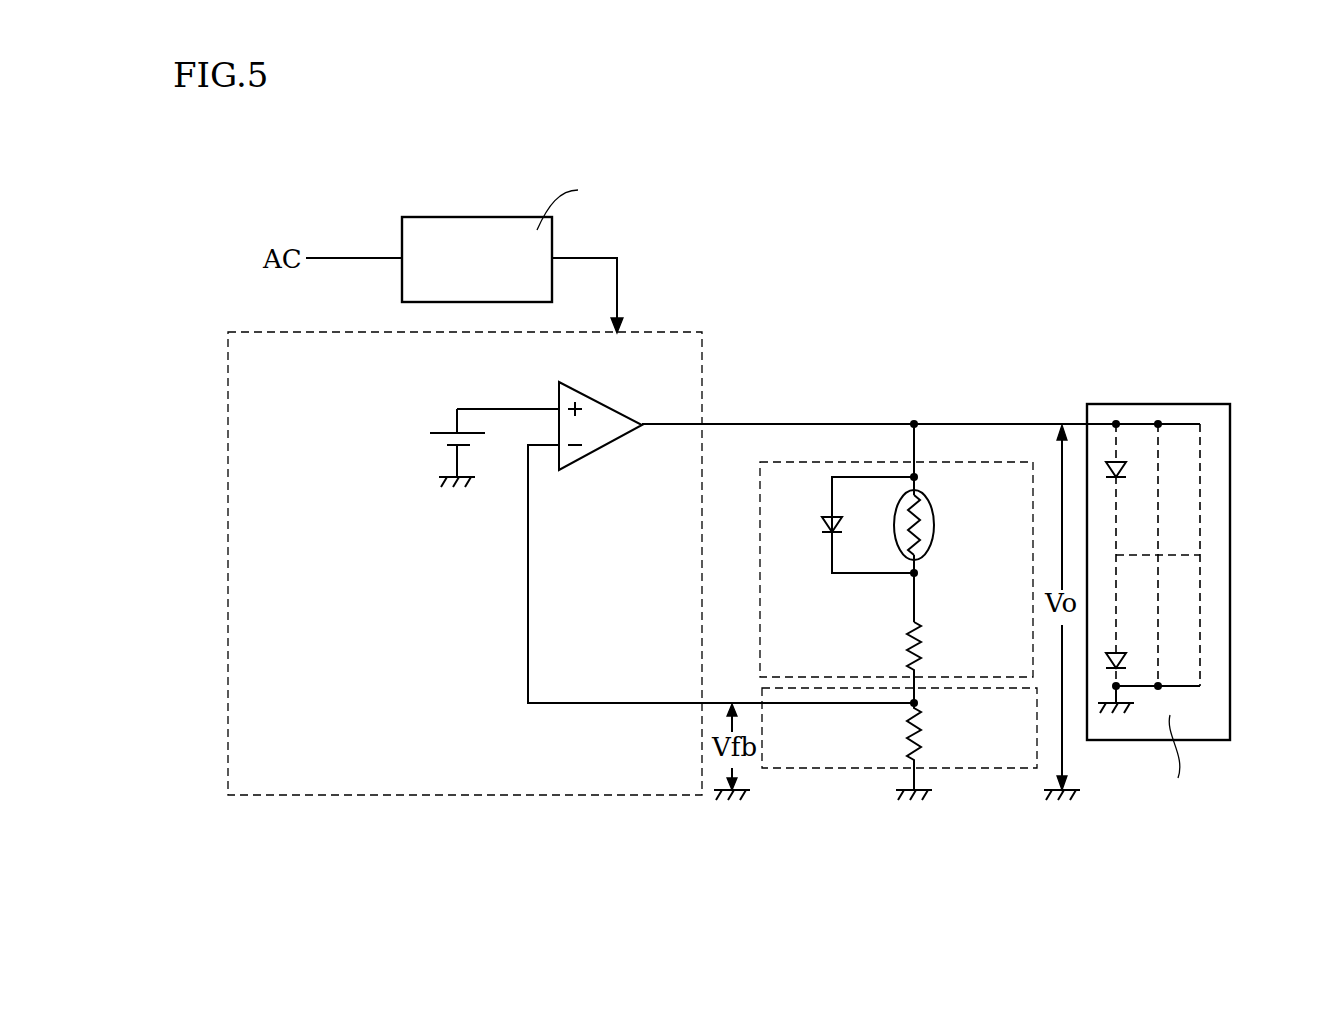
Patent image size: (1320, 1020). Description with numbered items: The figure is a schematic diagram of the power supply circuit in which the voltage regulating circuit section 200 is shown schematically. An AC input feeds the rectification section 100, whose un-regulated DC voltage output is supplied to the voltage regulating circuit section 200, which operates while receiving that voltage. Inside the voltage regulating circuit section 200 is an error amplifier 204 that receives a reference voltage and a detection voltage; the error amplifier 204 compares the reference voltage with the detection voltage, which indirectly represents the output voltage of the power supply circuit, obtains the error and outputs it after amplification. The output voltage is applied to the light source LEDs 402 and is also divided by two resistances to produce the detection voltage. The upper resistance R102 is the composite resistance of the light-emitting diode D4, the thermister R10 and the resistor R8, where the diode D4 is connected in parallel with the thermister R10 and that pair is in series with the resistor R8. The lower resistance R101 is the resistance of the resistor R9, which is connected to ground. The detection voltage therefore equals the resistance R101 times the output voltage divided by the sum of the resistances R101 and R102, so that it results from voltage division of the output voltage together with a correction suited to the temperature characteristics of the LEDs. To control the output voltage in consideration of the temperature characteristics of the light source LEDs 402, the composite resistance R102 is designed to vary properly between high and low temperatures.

The rectification section 100 is at (478, 217).
The voltage regulating circuit section 200 is at (668, 332).
The error amplifier 204 is at (616, 450).
The light source LEDs 402 is at (1148, 404).
The composite resistance R102 is at (800, 462).
The resistance of R9 R101 is at (820, 770).
The thermister R10 is at (975, 530).
The resistor R8 is at (922, 630).
The resistor R9 is at (922, 735).
The light-emitting diode D4 is at (827, 535).